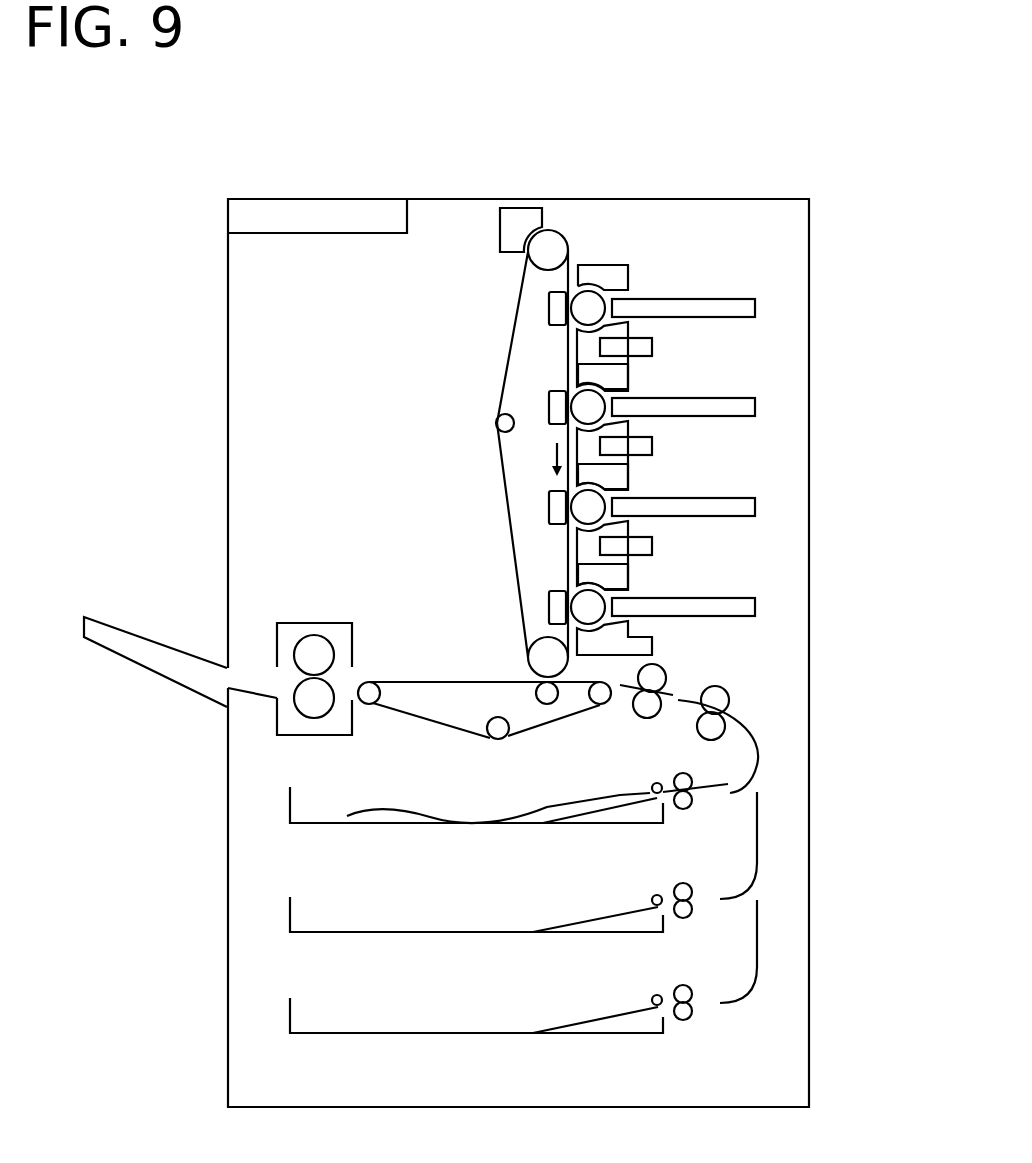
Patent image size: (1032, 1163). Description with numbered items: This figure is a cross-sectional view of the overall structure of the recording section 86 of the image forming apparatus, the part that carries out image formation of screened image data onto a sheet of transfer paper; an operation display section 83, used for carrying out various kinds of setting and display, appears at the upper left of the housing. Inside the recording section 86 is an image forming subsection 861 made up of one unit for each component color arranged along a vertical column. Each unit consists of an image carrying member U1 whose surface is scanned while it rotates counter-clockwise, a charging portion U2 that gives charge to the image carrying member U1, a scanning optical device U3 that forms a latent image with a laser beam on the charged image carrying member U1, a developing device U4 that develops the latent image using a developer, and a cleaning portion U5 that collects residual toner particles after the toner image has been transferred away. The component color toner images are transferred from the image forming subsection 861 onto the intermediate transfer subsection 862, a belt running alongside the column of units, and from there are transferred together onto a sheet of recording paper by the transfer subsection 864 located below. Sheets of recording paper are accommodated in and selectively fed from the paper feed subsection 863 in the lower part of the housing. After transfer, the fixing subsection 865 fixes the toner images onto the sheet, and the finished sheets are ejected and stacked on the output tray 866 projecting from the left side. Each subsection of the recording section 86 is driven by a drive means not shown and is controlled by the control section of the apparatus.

The operation display section 83 is at (331, 217).
The recording section 86 is at (760, 170).
The image forming subsection 861 is at (713, 405).
The intermediate transfer subsection 862 is at (480, 386).
The paper feed subsection 863 is at (784, 785).
The transfer subsection 864 is at (448, 665).
The fixing subsection 865 is at (318, 600).
The output tray 866 is at (127, 630).
The image carrying member U1 is at (580, 284).
The charging portion U2 is at (622, 332).
The scanning optical device U3 is at (758, 310).
The developing device U4 is at (612, 278).
The cleaning portion U5 is at (653, 347).